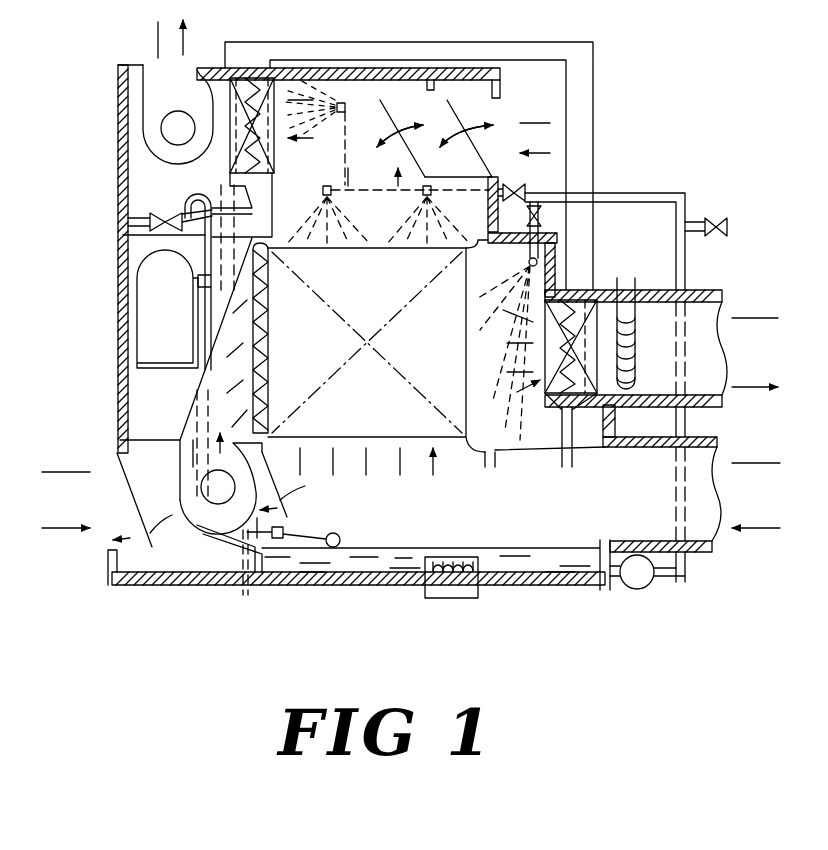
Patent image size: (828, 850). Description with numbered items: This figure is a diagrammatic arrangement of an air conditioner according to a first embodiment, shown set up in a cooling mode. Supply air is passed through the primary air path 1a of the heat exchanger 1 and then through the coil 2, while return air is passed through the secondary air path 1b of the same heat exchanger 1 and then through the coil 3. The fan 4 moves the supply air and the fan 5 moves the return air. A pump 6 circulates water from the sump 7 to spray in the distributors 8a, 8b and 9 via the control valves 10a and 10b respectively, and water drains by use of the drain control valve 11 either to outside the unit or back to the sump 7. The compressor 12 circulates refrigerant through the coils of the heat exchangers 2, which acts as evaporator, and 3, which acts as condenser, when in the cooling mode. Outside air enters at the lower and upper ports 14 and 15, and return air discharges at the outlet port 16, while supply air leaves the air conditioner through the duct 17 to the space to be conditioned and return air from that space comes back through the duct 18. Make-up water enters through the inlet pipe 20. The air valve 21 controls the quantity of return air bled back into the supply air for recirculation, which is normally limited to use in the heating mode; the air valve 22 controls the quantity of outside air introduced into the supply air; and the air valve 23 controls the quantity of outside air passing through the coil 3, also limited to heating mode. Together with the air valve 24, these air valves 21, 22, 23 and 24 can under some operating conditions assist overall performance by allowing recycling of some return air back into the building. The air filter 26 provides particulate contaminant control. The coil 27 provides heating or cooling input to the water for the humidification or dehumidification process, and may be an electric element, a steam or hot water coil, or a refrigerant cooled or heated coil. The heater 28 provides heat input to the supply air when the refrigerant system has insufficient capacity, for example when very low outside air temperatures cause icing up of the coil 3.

The heat exchanger 1 is at (356, 436).
The primary air path 1a is at (258, 315).
The secondary air path 1b is at (398, 467).
The coil 2 is at (555, 400).
The coil 3 is at (277, 162).
The fan 4 is at (178, 480).
The fan 5 is at (172, 163).
The pump 6 is at (647, 586).
The sump 7 is at (512, 549).
The distributor 8a is at (432, 195).
The distributor 8b is at (346, 104).
The distributor 9 is at (507, 341).
The control valve 10a is at (513, 188).
The control valve 10b is at (540, 212).
The drain control valve 11 is at (157, 216).
The compressor 12 is at (138, 328).
The lower port 14 is at (107, 506).
The upper port 15 is at (537, 138).
The outlet port 16 is at (171, 49).
The duct 17 is at (661, 348).
The duct 18 is at (691, 478).
The inlet pipe 20 is at (243, 594).
The air valve 21 is at (290, 518).
The air valve 22 is at (152, 547).
The air valve 23 is at (475, 157).
The air valve 24 is at (397, 114).
The air filter 26 is at (270, 363).
The coil 27 is at (470, 598).
The heater 28 is at (637, 288).